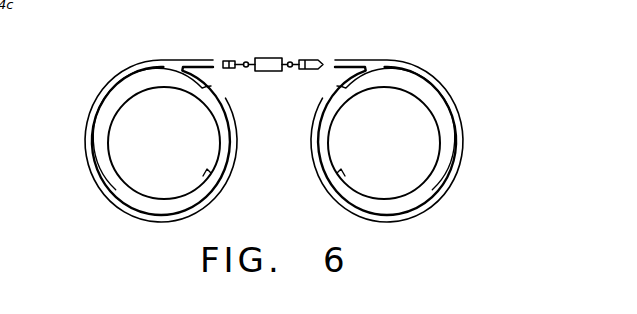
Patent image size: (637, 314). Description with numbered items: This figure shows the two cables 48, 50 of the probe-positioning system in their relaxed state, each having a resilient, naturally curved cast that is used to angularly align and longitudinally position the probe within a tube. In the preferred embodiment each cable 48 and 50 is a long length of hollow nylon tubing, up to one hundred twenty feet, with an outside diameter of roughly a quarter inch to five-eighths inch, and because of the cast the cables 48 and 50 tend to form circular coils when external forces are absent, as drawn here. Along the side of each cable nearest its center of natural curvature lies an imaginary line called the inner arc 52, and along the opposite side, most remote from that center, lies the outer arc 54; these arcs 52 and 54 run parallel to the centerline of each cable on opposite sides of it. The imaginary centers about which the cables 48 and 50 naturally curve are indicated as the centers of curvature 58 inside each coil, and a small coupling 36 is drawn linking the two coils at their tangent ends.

The connector link 36 is at (268, 58).
The cable 48 is at (96, 112).
The cable 50 is at (440, 93).
The inner arc 52 is at (209, 86).
The outer arc 54 is at (153, 60).
The center of curvature 58 is at (166, 143).